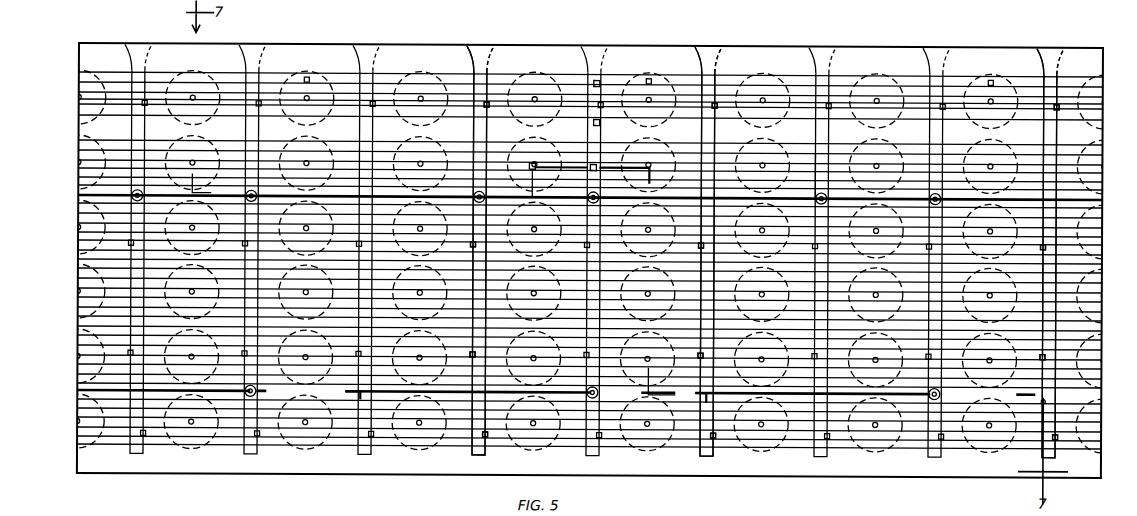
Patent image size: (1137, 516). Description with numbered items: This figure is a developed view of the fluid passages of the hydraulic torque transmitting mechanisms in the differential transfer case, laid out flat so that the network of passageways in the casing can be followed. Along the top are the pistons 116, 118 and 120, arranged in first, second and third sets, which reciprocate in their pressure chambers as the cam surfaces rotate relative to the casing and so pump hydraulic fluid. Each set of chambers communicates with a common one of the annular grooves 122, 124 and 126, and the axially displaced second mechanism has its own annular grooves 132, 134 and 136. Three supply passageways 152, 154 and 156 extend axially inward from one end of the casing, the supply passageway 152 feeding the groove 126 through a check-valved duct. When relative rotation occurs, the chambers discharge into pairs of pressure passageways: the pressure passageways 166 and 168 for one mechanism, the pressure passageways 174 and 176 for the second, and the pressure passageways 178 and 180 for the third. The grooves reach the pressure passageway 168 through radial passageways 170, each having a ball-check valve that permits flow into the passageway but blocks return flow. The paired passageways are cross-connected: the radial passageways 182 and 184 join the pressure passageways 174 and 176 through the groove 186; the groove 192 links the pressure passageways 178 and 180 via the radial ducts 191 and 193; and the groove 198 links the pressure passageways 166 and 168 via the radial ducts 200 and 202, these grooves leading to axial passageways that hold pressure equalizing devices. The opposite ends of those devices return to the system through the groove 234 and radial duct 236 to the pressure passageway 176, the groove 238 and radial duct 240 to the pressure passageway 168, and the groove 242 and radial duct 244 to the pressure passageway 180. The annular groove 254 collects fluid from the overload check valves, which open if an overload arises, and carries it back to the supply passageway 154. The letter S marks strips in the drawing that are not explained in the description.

The piston 116 is at (193, 72).
The piston 118 is at (79, 63).
The piston 120 is at (306, 72).
The annular groove 122 is at (1103, 104).
The annular groove 124 is at (1103, 92).
The annular groove 126 is at (1103, 72).
The annular groove 132 is at (1103, 177).
The annular groove 134 is at (1103, 160).
The annular groove 136 is at (1103, 140).
The supply passageway 152 is at (1062, 70).
The supply passageway 154 is at (720, 72).
The supply passageway 156 is at (380, 72).
The pressure passageway 166 is at (834, 70).
The pressure passageway 168 is at (606, 70).
The radial passageway 170 is at (600, 80).
The pressure passageway 174 is at (492, 70).
The pressure passageway 176 is at (264, 70).
The pressure passageway 178 is at (150, 70).
The pressure passageway 180 is at (948, 70).
The radial passageway 182 is at (530, 163).
The radial passageway 184 is at (247, 196).
The groove 186 is at (475, 196).
The radial duct 191 is at (144, 196).
The groove 192 is at (79, 195).
The radial duct 193 is at (930, 196).
The groove 198 is at (817, 193).
The radial duct 200 is at (828, 196).
The radial duct 202 is at (588, 197).
The groove 234 is at (79, 390).
The radial duct 236 is at (258, 390).
The groove 238 is at (335, 391).
The radial duct 240 is at (590, 397).
The groove 242 is at (702, 400).
The radial duct 244 is at (942, 392).
The annular groove 254 is at (79, 259).
The spacer strip S is at (707, 244).